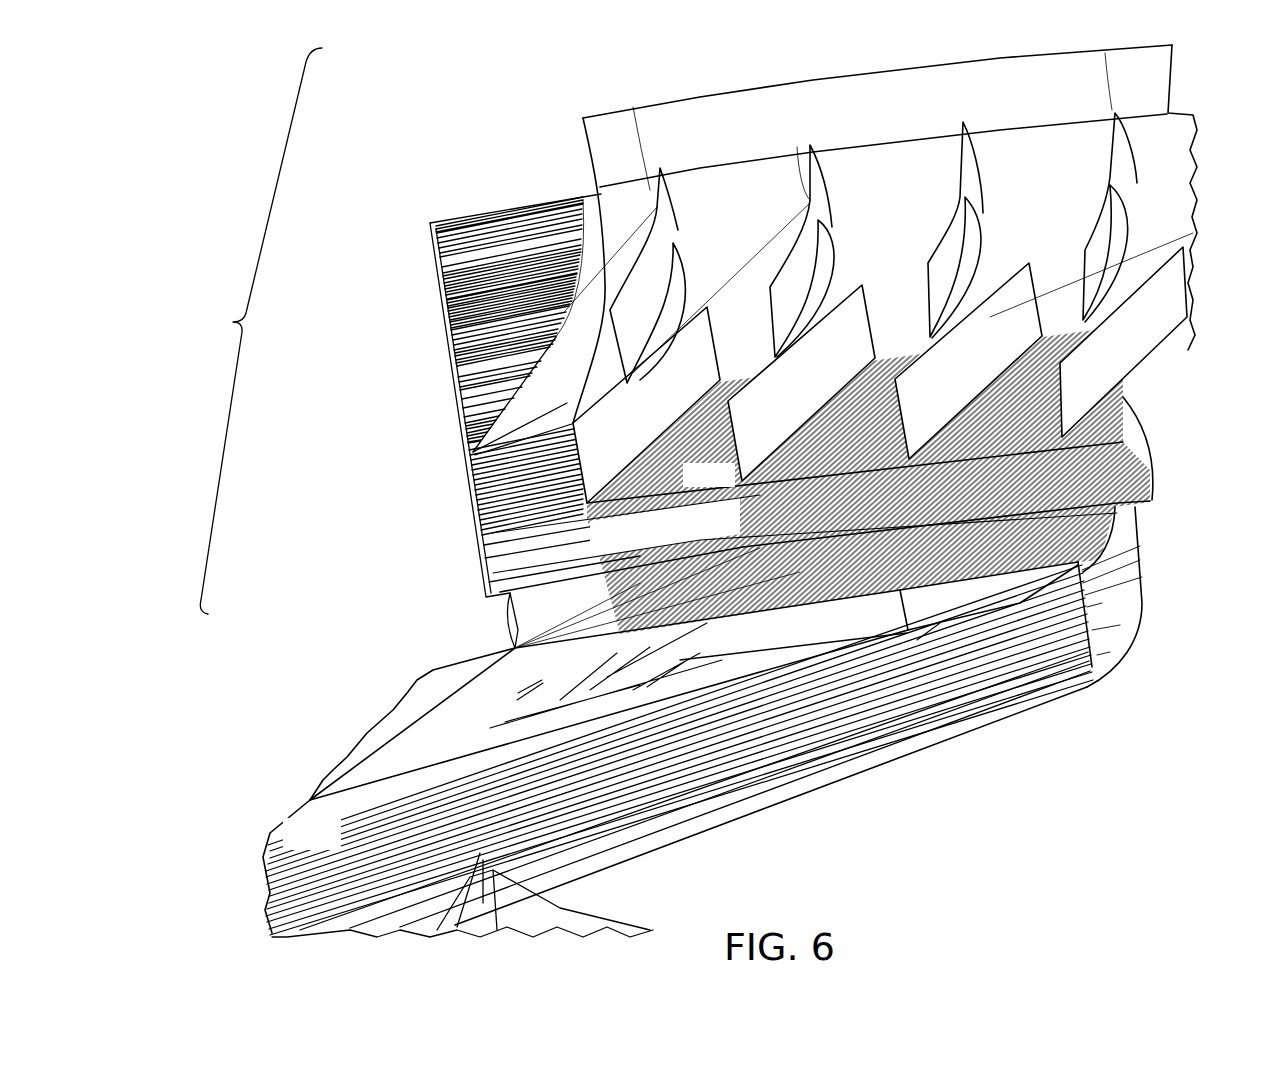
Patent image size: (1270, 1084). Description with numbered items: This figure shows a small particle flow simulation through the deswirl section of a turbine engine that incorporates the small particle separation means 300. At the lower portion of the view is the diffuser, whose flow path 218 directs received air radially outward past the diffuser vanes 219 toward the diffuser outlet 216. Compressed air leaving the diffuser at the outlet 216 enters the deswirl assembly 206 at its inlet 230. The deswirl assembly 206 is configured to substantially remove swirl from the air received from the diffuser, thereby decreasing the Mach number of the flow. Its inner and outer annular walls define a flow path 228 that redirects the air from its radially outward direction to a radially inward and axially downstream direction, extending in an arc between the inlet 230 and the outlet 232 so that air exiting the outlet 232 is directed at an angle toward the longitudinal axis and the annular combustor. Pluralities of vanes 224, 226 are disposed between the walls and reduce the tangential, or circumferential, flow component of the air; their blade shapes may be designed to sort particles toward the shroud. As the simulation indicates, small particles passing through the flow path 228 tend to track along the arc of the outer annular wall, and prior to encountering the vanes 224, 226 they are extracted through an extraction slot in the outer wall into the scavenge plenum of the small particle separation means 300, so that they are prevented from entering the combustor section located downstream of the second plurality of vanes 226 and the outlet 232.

The deswirl assembly 206 is at (250, 331).
The outlet 216 is at (772, 613).
The flow path 218 is at (334, 846).
The vanes 219 is at (395, 712).
The vanes 224 is at (633, 462).
The vanes 226 is at (676, 242).
The flow path 228 is at (732, 487).
The inlet 230 is at (505, 648).
The outlet 232 is at (645, 140).
The small particle separation means 300 is at (472, 210).